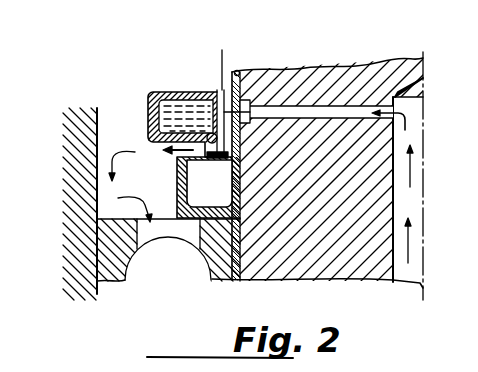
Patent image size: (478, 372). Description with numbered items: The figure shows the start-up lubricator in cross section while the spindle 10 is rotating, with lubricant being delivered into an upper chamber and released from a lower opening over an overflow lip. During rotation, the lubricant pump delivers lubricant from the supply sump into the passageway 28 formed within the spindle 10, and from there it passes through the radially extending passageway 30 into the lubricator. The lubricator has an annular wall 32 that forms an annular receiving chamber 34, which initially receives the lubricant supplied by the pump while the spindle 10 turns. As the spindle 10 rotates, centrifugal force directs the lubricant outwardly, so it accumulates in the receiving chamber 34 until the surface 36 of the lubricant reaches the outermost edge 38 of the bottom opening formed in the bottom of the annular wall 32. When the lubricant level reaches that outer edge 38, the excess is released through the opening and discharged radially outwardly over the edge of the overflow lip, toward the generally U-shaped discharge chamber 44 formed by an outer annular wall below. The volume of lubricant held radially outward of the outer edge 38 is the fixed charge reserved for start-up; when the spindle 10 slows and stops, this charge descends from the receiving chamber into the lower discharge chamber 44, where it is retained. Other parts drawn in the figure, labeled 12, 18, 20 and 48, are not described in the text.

The spindle 10 is at (337, 252).
The axis centerline 12 is at (428, 86).
The passage bore 18 is at (178, 272).
The cylinder wall 20 is at (79, 137).
The passageway 28 is at (413, 140).
The radially extending passageway 30 is at (322, 110).
The annular wall 32 is at (160, 92).
The annular receiving chamber 34 is at (222, 50).
The surface of the lubricant 36 is at (217, 95).
The outermost edge 38 is at (222, 134).
The discharge chamber 44 is at (188, 191).
The gap passage 48 is at (180, 160).